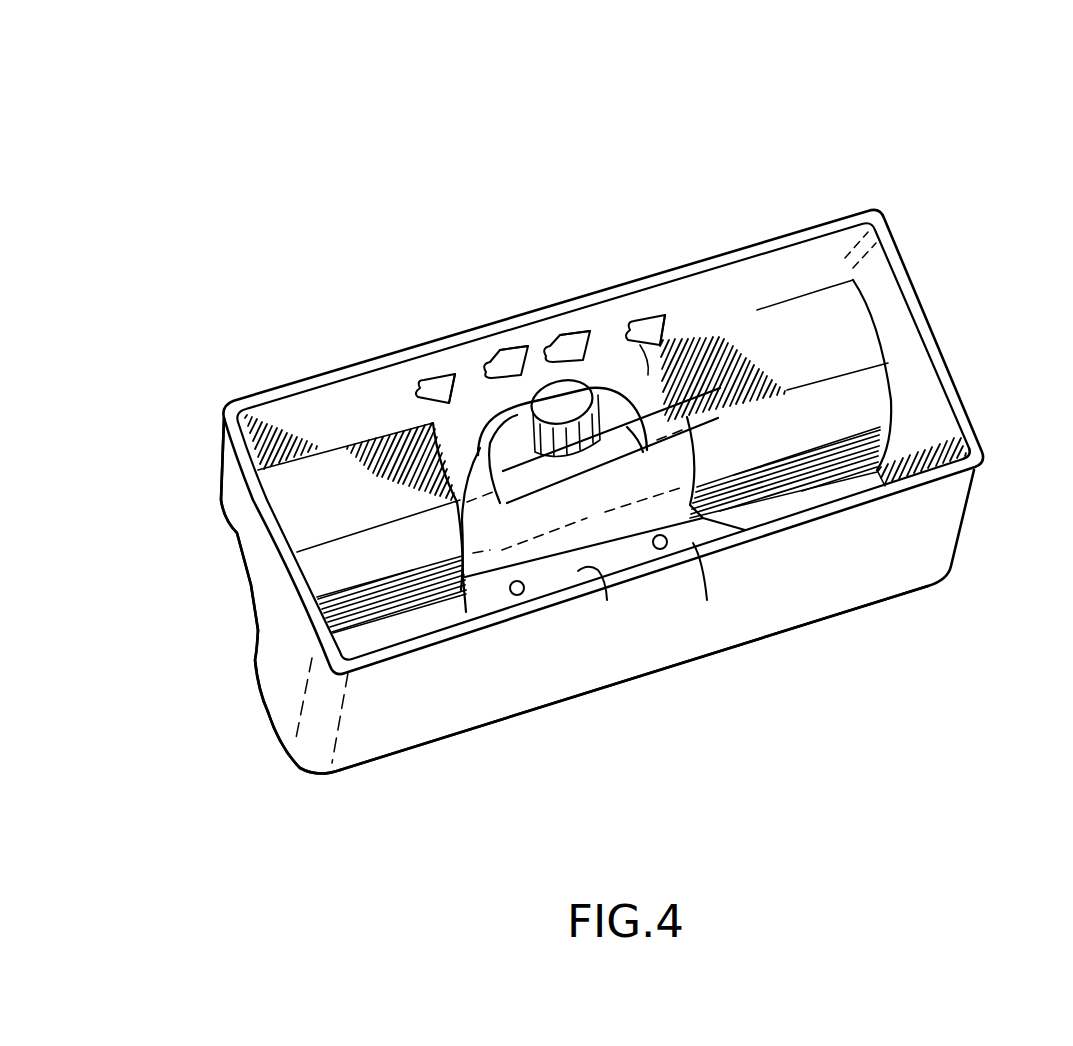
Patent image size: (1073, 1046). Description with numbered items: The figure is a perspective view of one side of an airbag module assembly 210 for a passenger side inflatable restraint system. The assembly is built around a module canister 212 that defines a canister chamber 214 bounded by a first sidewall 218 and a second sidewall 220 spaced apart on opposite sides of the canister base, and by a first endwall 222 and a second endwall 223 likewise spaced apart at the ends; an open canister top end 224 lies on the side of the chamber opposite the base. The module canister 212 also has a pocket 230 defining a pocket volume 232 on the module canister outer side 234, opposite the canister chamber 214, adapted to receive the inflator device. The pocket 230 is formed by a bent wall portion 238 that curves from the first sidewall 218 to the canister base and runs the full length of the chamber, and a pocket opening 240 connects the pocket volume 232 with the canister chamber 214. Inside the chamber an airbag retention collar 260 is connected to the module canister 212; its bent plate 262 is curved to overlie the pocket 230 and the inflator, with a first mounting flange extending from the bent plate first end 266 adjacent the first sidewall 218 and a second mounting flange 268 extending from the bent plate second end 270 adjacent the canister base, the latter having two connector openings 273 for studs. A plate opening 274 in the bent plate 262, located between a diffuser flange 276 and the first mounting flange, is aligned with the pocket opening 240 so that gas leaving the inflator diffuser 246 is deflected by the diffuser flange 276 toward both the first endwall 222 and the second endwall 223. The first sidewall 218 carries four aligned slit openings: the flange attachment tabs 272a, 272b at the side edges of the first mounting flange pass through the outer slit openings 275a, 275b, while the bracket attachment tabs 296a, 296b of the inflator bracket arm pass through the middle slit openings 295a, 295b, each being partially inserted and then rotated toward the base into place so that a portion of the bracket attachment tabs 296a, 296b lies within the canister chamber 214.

The airbag module assembly 210 is at (979, 196).
The module canister 212 is at (891, 612).
The canister chamber 214 is at (906, 410).
The first sidewall 218 is at (306, 380).
The second sidewall 220 is at (435, 693).
The first endwall 222 is at (247, 517).
The second endwall 223 is at (970, 460).
The open canister top end 224 is at (829, 206).
The pocket 230 is at (808, 328).
The pocket volume 232 is at (230, 599).
The module canister outer side 234 is at (260, 716).
The bent wall portion 238 is at (343, 488).
The pocket opening 240 is at (457, 503).
The inflator diffuser 246 is at (660, 447).
The airbag retention collar 260 is at (690, 373).
The bent plate 262 is at (428, 452).
The bent plate first end 266 is at (645, 365).
The second mounting flange 268 is at (607, 600).
The bent plate second end 270 is at (600, 470).
The flange attachment tab 272a is at (438, 390).
The flange attachment tab 272b is at (640, 327).
The connector openings 273 is at (524, 584).
The plate opening 274 is at (598, 380).
The slit opening 275a is at (449, 393).
The slit opening 275b is at (650, 347).
The diffuser flange 276 is at (697, 610).
The slit opening 295a is at (488, 347).
The slit opening 295b is at (547, 332).
The bracket attachment tab 296a is at (520, 330).
The bracket attachment tab 296b is at (580, 330).